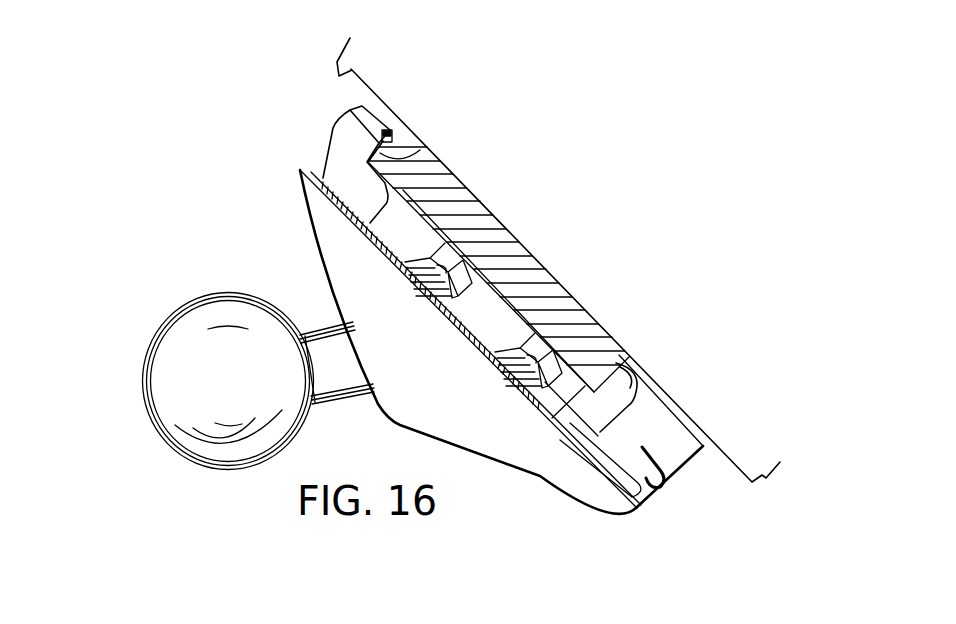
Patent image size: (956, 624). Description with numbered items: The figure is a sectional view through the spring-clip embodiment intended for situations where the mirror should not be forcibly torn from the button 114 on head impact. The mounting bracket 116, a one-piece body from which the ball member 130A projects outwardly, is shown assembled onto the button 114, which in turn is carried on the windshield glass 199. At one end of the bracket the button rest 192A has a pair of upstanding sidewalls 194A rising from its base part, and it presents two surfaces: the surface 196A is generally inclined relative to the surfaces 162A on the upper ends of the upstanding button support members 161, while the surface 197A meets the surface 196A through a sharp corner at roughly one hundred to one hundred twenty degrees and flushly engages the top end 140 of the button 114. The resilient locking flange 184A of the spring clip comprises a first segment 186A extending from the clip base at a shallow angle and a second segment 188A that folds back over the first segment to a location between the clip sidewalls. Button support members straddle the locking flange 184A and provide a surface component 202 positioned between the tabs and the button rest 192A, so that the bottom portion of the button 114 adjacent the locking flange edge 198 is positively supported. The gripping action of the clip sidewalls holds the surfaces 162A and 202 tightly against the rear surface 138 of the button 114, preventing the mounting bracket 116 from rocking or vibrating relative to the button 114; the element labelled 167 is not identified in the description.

The button 114 is at (508, 252).
The mounting bracket 116 is at (510, 468).
The ball member 130A is at (190, 348).
The rear surface of the button 138 is at (512, 298).
The top end of the button 140 is at (389, 129).
The button support members 161 is at (425, 287).
The surfaces on the upper end of the button support members 162A is at (464, 240).
The second tab section 167 is at (520, 383).
The locking flange 184A is at (670, 490).
The first segment of the locking flange 186A is at (640, 510).
The second segment of the locking flange 188A is at (670, 477).
The button rest 192A is at (333, 162).
The upstanding sidewalls of the button rest 194A is at (353, 127).
The inclined surface of the button rest 196A is at (407, 168).
The button-engaging surface of the button rest 197A is at (417, 150).
The locking flange edge 198 is at (636, 378).
The windshield glass 199 is at (355, 67).
The surface component 202 is at (625, 352).